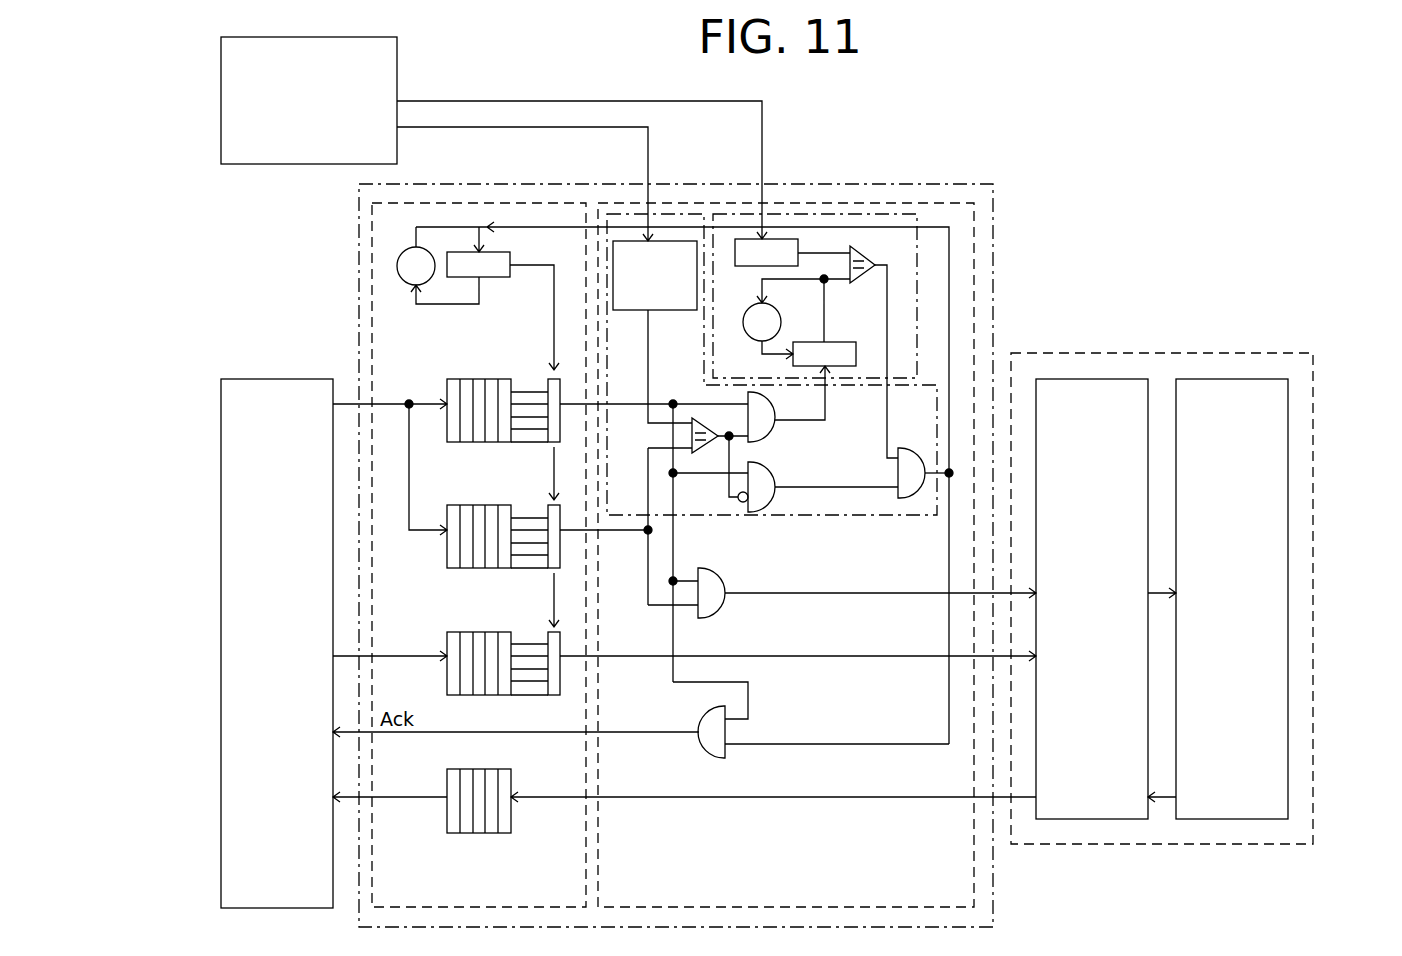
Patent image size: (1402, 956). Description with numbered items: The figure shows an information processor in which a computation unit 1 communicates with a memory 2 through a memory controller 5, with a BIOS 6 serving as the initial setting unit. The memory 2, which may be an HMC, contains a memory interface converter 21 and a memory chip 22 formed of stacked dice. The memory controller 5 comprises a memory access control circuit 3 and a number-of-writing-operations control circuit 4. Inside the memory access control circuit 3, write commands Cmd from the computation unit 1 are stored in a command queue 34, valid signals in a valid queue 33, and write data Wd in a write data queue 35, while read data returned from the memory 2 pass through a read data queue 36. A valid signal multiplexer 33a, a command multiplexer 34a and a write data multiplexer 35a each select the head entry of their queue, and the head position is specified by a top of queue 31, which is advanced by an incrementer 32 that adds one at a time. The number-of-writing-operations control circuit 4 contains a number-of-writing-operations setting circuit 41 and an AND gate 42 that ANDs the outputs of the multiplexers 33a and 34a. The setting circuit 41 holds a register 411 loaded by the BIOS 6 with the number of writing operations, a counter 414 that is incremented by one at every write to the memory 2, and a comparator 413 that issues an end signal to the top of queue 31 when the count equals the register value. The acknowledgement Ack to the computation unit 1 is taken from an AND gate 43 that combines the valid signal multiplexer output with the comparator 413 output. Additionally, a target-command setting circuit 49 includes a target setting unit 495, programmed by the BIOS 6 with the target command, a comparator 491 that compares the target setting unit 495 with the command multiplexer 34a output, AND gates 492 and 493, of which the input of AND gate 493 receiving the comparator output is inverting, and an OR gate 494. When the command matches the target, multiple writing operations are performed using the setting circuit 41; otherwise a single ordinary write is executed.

The computation unit 1 is at (254, 379).
The memory 2 is at (1165, 353).
The memory interface converter 21 is at (1100, 379).
The memory chip 22 is at (1238, 379).
The memory access control circuit 3 is at (372, 214).
The top of queue 31 is at (490, 277).
The +1 incrementer 32 is at (405, 281).
The valid queue 33 is at (446, 412).
The valid signal multiplexer 33a is at (553, 443).
The command queue 34 is at (475, 501).
The command multiplexer 34a is at (553, 570).
The write data queue 35 is at (446, 649).
The write data multiplexer 35a is at (553, 697).
The read data queue 36 is at (511, 828).
The number-of-writing-operations control circuit 4 is at (974, 237).
The number-of-writing-operations setting circuit 41 is at (720, 213).
The register 411 is at (782, 239).
The comparator 413 is at (866, 252).
The counter 414 is at (838, 340).
The AND gate 42 is at (750, 337).
The AND gate 43 is at (705, 715).
The target-command setting circuit 49 is at (830, 515).
The comparator 491 is at (708, 450).
The AND gate 492 is at (775, 438).
The AND gate 493 is at (775, 500).
The OR gate 494 is at (898, 460).
The target setting unit 495 is at (678, 312).
The memory controller 5 is at (905, 184).
The BIOS 6 is at (397, 58).